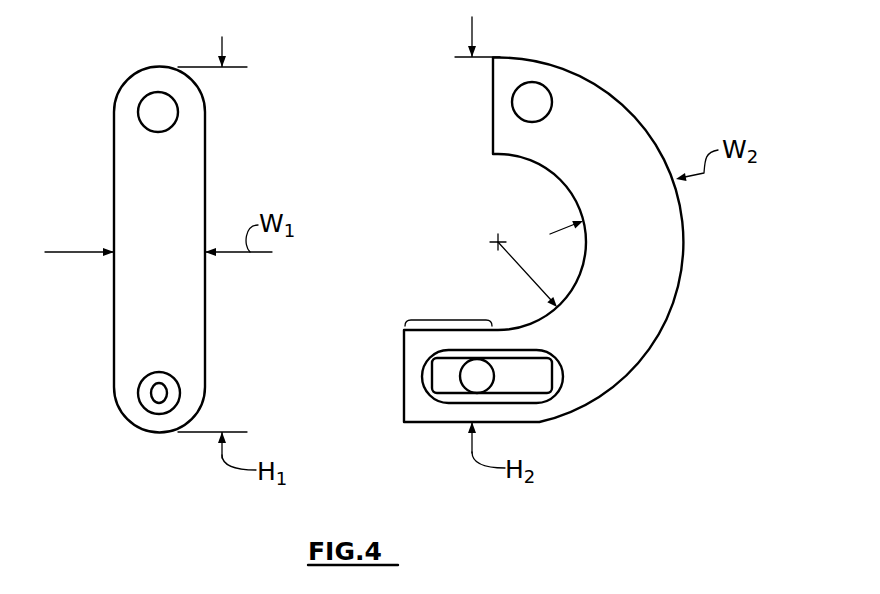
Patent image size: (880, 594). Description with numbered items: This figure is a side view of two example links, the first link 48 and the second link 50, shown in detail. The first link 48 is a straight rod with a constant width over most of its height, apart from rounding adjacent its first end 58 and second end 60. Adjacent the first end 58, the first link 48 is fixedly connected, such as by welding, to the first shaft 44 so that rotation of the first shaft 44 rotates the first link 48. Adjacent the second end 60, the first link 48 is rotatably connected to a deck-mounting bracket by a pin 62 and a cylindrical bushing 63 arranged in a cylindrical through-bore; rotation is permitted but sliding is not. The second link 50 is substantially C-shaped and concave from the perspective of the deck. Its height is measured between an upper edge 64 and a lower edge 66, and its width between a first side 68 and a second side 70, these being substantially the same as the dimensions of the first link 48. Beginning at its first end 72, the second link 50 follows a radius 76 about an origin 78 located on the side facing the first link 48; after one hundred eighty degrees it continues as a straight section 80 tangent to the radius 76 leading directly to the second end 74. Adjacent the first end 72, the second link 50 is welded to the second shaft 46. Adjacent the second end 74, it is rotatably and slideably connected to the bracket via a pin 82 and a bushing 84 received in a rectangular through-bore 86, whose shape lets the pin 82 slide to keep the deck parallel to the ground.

The first shaft 44 is at (153, 110).
The second shaft 46 is at (532, 102).
The first link 48 is at (114, 222).
The second link 50 is at (643, 152).
The first end 58 is at (156, 67).
The second end 60 is at (162, 433).
The pin 62 is at (153, 396).
The cylindrical bushing 63 is at (143, 387).
The upper edge 64 is at (505, 57).
The lower edge 66 is at (517, 422).
The first side 68 is at (557, 178).
The second side 70 is at (628, 107).
The first end 72 is at (493, 138).
The second end 74 is at (403, 350).
The radius 76 is at (535, 283).
The origin 78 is at (492, 245).
The straight section 80 is at (447, 320).
The pin 82 is at (470, 382).
The bushing 84 is at (537, 397).
The rectangular through-bore 86 is at (540, 383).